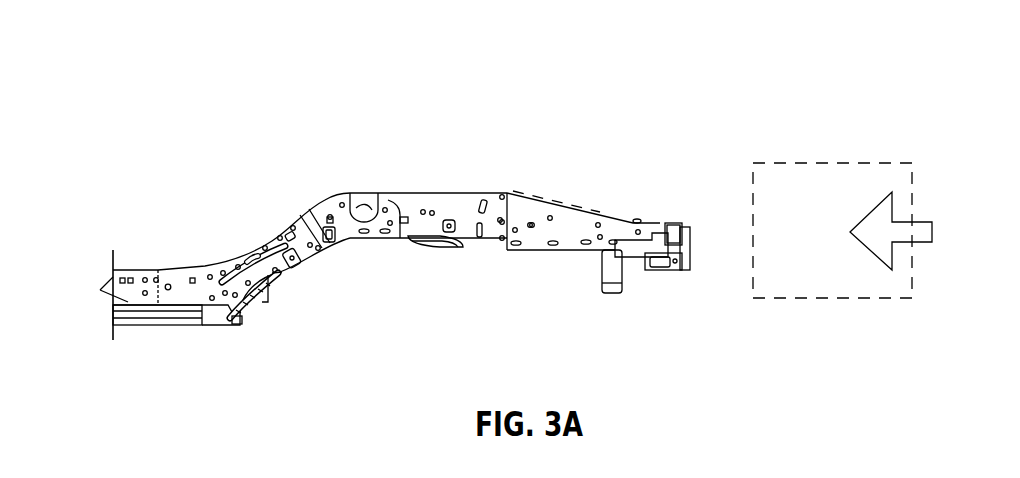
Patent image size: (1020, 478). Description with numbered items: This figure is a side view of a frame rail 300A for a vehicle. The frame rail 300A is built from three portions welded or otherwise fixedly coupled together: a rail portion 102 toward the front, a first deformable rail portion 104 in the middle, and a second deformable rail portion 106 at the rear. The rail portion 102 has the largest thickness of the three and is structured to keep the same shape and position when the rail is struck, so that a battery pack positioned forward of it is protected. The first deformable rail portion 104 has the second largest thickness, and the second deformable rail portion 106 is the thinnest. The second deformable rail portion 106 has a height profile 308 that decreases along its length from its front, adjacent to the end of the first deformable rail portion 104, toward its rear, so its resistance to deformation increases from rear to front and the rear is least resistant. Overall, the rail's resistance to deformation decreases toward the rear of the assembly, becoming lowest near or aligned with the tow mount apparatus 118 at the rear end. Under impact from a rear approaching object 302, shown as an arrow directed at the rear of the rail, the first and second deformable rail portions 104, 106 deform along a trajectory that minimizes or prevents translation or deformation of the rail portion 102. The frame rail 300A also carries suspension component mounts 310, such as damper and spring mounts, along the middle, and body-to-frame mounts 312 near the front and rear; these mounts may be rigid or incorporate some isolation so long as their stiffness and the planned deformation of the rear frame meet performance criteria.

The frame rail 300A is at (130, 46).
The rail portion 102 is at (133, 177).
The first deformable rail portion 104 is at (312, 178).
The second deformable rail portion 106 is at (535, 177).
The height profile 308 is at (532, 190).
The suspension component mounts 310 is at (345, 242).
The body-to-frame mounts 312 is at (247, 320).
The tow mount apparatus 118 is at (668, 272).
The rear approaching object 302 is at (823, 280).